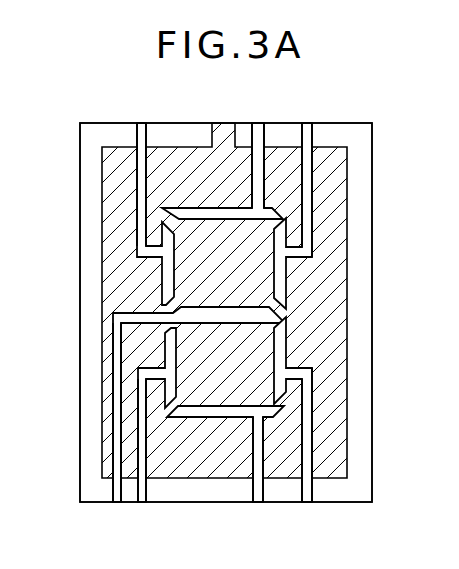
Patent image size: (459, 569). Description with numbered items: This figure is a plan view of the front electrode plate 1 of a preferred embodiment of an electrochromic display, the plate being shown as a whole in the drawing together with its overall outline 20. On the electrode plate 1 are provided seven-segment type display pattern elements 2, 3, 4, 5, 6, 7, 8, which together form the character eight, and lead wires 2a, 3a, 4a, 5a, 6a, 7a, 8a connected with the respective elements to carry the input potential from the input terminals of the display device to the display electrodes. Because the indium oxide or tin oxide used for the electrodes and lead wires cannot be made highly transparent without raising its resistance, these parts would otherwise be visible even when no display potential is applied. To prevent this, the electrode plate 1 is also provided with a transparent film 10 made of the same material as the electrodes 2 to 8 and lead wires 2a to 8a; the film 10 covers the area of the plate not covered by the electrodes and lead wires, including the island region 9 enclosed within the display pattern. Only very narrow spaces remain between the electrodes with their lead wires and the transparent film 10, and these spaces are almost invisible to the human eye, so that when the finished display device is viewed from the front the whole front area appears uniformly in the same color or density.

The electrode plate 1 is at (348, 140).
The display pattern element 2 is at (192, 211).
The lead wire 2a is at (253, 187).
The display pattern element 3 is at (283, 282).
The lead wire 3a is at (316, 236).
The display pattern element 4 is at (284, 343).
The lead wire 4a is at (313, 410).
The display pattern element 5 is at (220, 418).
The lead wire 5a is at (262, 462).
The display pattern element 6 is at (172, 364).
The lead wire 6a is at (143, 445).
The display pattern element 7 is at (171, 268).
The lead wire 7a is at (140, 198).
The display pattern element 8 is at (248, 306).
The lead wire 8a is at (118, 368).
The insulating island 9 is at (253, 226).
The transparent film 10 is at (346, 305).
The electrode device 20 is at (384, 148).